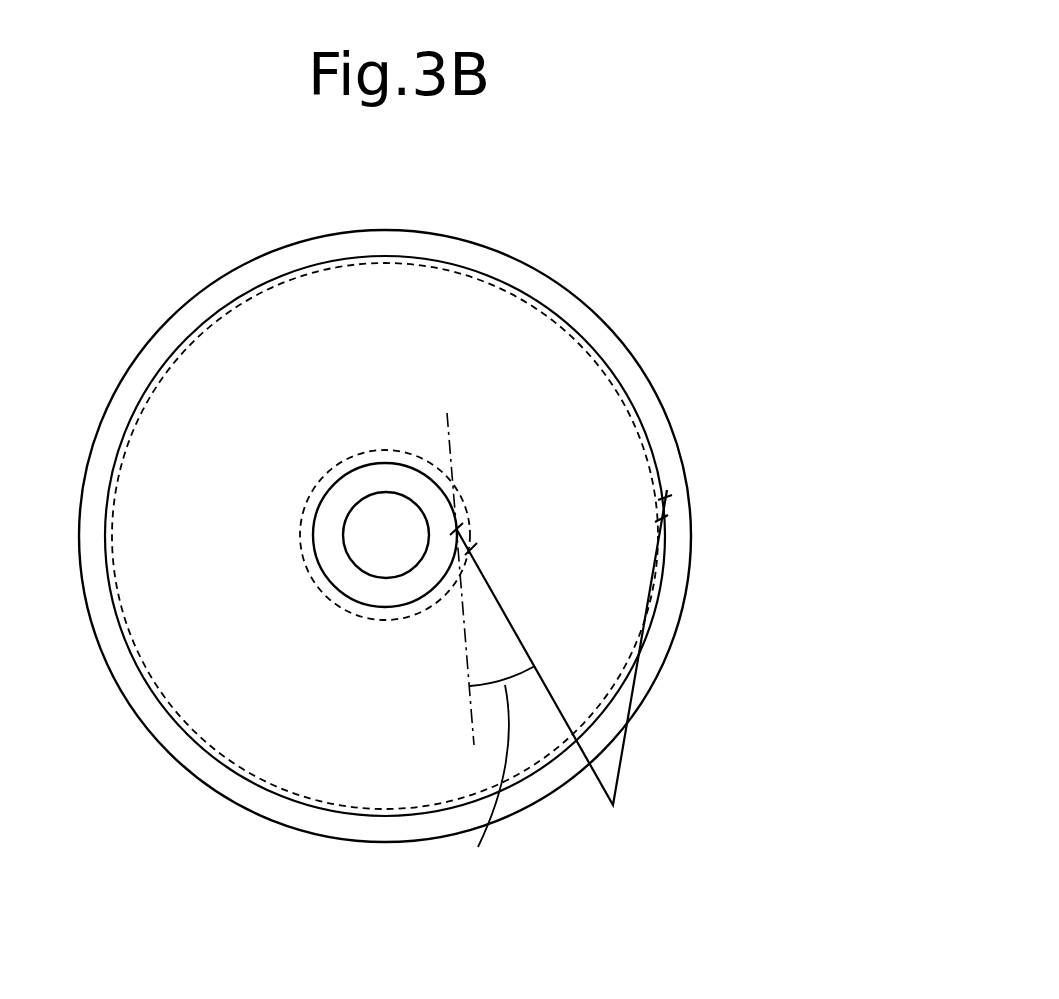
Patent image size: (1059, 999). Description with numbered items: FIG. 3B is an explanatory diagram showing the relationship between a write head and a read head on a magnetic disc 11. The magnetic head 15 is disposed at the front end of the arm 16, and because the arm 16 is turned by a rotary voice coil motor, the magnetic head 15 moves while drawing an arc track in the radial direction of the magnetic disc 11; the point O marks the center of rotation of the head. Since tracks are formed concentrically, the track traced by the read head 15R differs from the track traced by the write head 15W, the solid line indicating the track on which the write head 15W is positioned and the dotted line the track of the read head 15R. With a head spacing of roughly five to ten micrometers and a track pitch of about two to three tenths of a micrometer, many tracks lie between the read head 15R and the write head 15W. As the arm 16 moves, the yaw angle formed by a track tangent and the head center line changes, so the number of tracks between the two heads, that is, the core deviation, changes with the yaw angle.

The magnetic disc 11 is at (400, 213).
The magnetic head 15 is at (560, 442).
The write head 15W is at (458, 527).
The read head 15R is at (472, 548).
The arm 16 is at (523, 645).